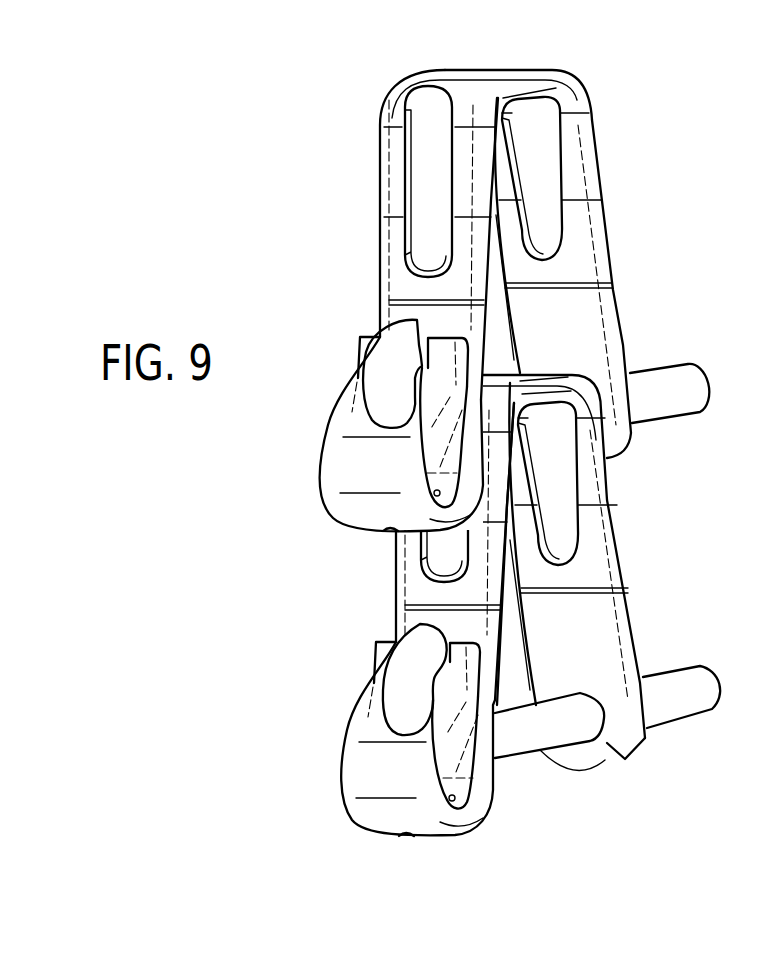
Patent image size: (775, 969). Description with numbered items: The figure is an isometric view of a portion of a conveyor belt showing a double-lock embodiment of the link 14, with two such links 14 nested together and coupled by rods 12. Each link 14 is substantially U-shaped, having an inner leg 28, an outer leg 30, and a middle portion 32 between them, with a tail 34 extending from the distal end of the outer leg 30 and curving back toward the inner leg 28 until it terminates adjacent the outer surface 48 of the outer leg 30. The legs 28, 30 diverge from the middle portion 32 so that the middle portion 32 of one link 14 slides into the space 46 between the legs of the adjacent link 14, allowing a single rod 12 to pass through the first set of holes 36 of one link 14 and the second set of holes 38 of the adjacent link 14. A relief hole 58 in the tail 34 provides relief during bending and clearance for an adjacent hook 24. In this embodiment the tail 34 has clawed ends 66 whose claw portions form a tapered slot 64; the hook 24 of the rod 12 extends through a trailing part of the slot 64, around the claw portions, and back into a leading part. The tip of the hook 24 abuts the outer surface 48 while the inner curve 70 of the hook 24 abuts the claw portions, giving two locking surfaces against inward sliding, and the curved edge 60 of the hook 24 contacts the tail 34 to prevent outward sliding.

The rod 12 is at (678, 398).
The link 14 is at (381, 54).
The hook 24 is at (401, 331).
The inner leg 28 is at (598, 256).
The outer leg 30 is at (394, 147).
The middle portion 32 is at (549, 70).
The tail 34 is at (342, 457).
The first set of holes 36 is at (608, 733).
The second set of holes 38 is at (532, 168).
The space 46 is at (511, 638).
The outer surface of the outer leg 48 is at (389, 242).
The relief hole 58 is at (409, 842).
The curved edge 60 is at (421, 731).
The tapered slot 64 is at (362, 413).
The clawed ends 66 is at (444, 348).
The inner curve 70 is at (411, 385).